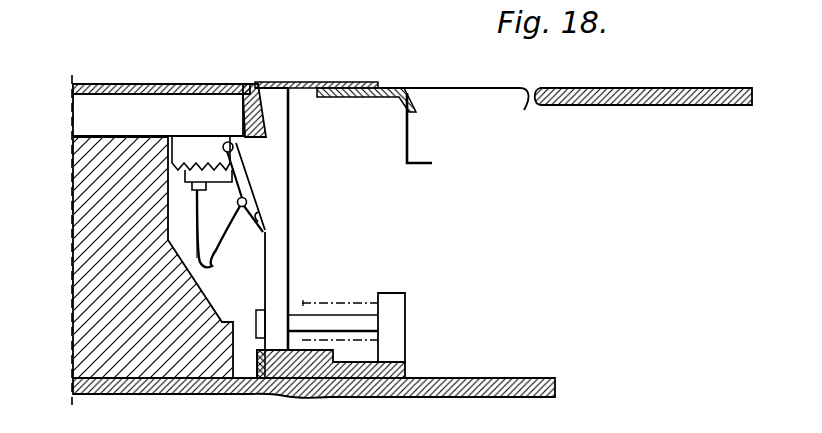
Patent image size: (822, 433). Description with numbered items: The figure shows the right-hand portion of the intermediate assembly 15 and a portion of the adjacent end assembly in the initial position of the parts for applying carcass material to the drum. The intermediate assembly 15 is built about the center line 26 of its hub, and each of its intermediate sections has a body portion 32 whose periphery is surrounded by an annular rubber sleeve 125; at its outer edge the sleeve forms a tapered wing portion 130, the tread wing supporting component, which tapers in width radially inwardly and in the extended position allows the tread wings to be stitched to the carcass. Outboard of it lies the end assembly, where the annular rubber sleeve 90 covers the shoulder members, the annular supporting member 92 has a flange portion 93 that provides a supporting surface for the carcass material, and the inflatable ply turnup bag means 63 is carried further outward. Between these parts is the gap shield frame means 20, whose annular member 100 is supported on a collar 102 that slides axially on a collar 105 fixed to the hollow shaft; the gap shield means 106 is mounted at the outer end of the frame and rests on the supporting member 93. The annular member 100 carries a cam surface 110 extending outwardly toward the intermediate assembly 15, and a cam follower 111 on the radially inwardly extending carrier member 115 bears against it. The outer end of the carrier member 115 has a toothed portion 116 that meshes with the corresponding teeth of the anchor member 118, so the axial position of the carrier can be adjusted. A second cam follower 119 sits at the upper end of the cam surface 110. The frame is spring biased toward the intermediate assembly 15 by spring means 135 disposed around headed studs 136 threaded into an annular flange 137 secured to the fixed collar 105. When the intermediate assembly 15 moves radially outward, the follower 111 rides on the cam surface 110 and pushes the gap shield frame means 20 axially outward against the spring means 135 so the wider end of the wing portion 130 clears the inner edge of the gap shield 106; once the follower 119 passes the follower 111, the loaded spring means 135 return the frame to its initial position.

The intermediate assembly 15 is at (68, 124).
The gap shield frame means 20 is at (298, 247).
The center line 26 is at (72, 312).
The body portion 32 is at (168, 107).
The inflatable ply turnup bag means 63 is at (703, 88).
The annular rubber sleeve 90 is at (471, 88).
The annular supporting member 92 is at (410, 143).
The flange portion 93 is at (341, 97).
The annular member 100 is at (278, 191).
The collar 102 is at (302, 394).
The collar 105 is at (406, 370).
The gap shield means 106 is at (301, 83).
The cam surface 110 is at (263, 225).
The cam follower 111 is at (249, 201).
The carrier member 115 is at (229, 247).
The toothed portion 116 is at (237, 169).
The anchor member 118 is at (196, 147).
The cam follower 119 is at (234, 150).
The annular rubber sleeve 125 is at (113, 83).
The tapered wing portion 130 is at (262, 123).
The spring means 135 is at (311, 304).
The headed studs 136 is at (351, 318).
The annular flange 137 is at (406, 297).